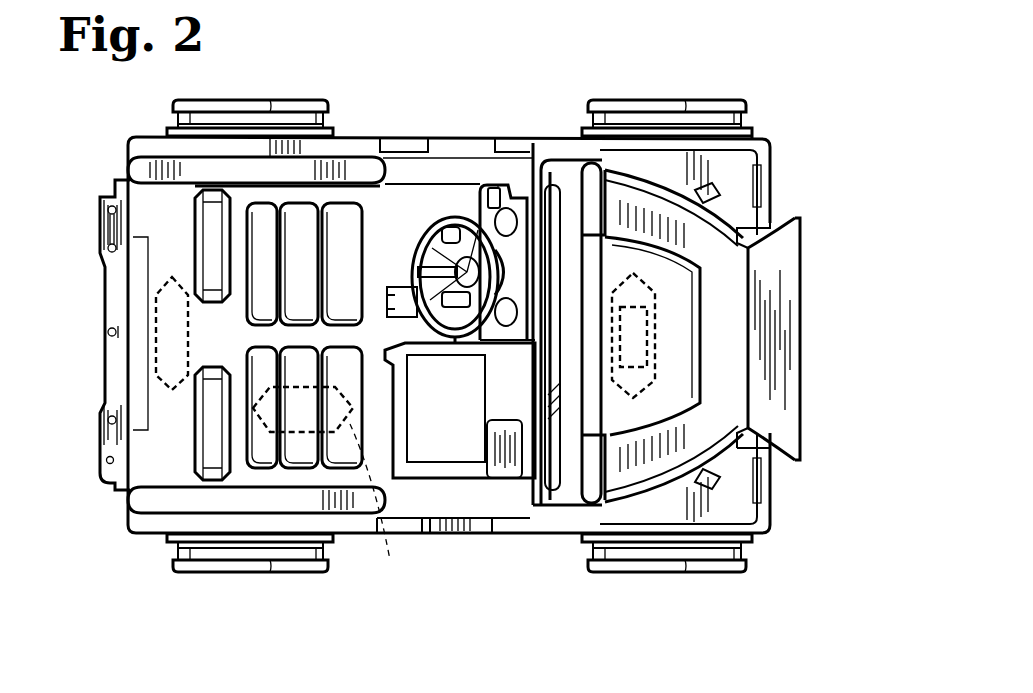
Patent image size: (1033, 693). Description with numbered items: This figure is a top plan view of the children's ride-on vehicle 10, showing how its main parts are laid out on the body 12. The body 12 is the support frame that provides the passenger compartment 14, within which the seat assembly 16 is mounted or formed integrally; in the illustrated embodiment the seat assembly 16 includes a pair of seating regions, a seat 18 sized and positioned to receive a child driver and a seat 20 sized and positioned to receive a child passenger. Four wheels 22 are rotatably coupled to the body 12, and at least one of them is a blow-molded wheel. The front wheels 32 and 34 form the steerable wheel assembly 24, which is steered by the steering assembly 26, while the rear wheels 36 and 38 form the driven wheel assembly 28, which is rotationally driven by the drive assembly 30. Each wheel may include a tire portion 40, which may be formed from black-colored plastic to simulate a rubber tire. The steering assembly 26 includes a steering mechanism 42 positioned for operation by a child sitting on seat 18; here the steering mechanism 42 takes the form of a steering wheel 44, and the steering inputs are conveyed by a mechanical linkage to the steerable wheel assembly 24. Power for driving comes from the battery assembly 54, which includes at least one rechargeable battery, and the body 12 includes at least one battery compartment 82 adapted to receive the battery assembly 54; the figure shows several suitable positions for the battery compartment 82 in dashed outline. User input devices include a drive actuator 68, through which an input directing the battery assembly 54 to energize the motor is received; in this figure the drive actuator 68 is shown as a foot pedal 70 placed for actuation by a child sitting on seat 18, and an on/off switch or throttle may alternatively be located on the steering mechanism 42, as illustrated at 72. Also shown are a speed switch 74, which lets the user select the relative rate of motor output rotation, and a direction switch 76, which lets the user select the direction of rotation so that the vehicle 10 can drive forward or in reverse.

The children's ride-on vehicle 10 is at (843, 190).
The body 12 is at (804, 293).
The passenger compartment 14 is at (447, 175).
The seat assembly 16 is at (185, 210).
The seat 18 is at (212, 217).
The seat 20 is at (212, 412).
The wheels 22 is at (140, 117).
The steerable wheel assembly 24 is at (709, 94).
The steering assembly 26 is at (520, 293).
The driven wheel assembly 28 is at (288, 95).
The drive assembly 30 is at (455, 533).
The front wheel 32 is at (623, 100).
The front wheel 34 is at (632, 573).
The rear wheel 36 is at (197, 100).
The rear wheel 38 is at (220, 574).
The tire portion 40 is at (514, 280).
The steering mechanism 42 is at (426, 333).
The steering wheel 44 is at (465, 342).
The battery assembly 54 is at (652, 321).
The drive actuator 68 is at (435, 290).
The foot pedal 70 is at (438, 297).
The on/off switch or throttle 72 is at (440, 235).
The speed switch 74 is at (490, 183).
The direction switch 76 is at (500, 183).
The battery compartment 82 is at (166, 388).